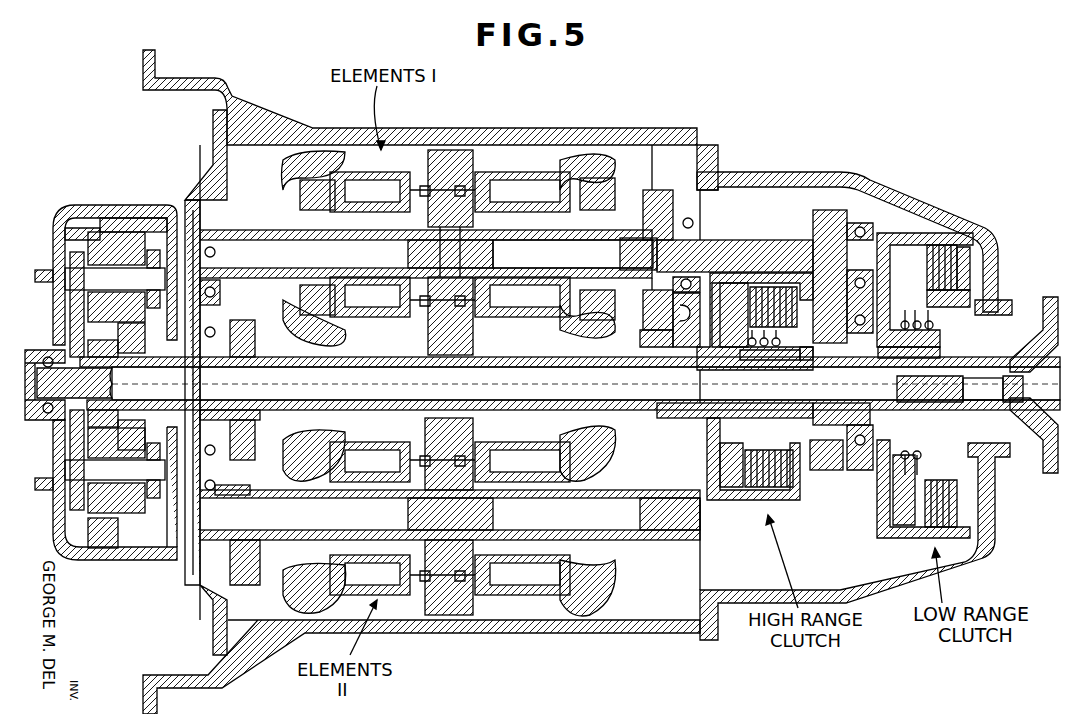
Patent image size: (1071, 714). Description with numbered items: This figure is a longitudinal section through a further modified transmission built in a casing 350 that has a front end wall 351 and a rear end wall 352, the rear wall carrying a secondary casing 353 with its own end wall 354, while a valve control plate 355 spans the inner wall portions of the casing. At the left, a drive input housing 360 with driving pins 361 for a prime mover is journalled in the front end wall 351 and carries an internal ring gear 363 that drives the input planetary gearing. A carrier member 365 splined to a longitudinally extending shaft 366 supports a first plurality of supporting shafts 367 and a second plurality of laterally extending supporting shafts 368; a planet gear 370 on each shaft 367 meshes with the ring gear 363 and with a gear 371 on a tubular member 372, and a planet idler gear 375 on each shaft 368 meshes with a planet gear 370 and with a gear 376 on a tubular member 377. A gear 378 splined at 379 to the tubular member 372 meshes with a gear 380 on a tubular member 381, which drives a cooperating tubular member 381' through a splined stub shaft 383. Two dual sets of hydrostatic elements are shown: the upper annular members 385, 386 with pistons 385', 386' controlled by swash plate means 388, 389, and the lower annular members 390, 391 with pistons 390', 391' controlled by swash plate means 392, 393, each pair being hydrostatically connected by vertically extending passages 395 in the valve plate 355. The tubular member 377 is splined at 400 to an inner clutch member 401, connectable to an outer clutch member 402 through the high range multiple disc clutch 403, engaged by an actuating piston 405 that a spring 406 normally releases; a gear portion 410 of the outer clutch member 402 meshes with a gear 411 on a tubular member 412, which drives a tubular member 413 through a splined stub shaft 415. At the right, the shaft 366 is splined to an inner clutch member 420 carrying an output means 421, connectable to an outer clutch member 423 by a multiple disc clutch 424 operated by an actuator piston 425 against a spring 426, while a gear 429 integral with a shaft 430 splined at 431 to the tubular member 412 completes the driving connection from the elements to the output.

The casing 350 is at (470, 132).
The front end wall 351 is at (205, 192).
The rear end wall 352 is at (712, 196).
The secondary casing 353 is at (810, 185).
The end wall 354 is at (1000, 275).
The valve control plate 355 is at (475, 158).
The drive input housing 360 is at (105, 205).
The driving pins 361 is at (40, 270).
The internal ring gear 363 is at (136, 218).
The carrier member 365 is at (70, 312).
The longitudinally extending shaft 366 is at (586, 383).
The supporting shafts 367 is at (115, 277).
The supporting shafts 368 is at (115, 470).
The planet gear 370 is at (75, 240).
The gear 371 is at (118, 328).
The tubular member 372 is at (178, 368).
The planet idler gear 375 is at (135, 512).
The gear 376 is at (110, 434).
The tubular member 377 is at (258, 395).
The gear 378 is at (240, 320).
The spline 379 is at (256, 430).
The gear 380 is at (255, 585).
The tubular member 381 is at (450, 515).
The cooperating tubular member 381' is at (653, 494).
The splined stub shaft 383 is at (476, 514).
The annular member 385 is at (430, 137).
The pistons 385' is at (395, 253).
The annular member 386 is at (555, 139).
The pistons 386' is at (522, 246).
The swash plate means 388 is at (270, 180).
The swash plate means 389 is at (622, 160).
The annular member 390 is at (437, 542).
The pistons 390' is at (379, 521).
The annular member 391 is at (539, 634).
The pistons 391' is at (545, 521).
The swash plate means 392 is at (318, 455).
The swash plate means 393 is at (630, 592).
The vertically extending passages 395 is at (473, 350).
The spline 400 is at (790, 360).
The inner clutch member 401 is at (812, 360).
The outer clutch member 402 is at (798, 285).
The multiple disc clutch 403 is at (770, 287).
The actuating piston 405 is at (720, 345).
The spring 406 is at (752, 347).
The gear portion 410 is at (648, 338).
The gear 411 is at (710, 175).
The tubular member 412 is at (631, 254).
The tubular member 413 is at (426, 254).
The splined stub shaft 415 is at (530, 254).
The inner clutch member 420 is at (960, 389).
The output means 421 is at (1040, 325).
The outer clutch member 423 is at (935, 235).
The multiple disc clutch 424 is at (972, 262).
The actuator piston 425 is at (927, 255).
The spring 426 is at (903, 348).
The gear 429 is at (832, 210).
The shaft 430 is at (730, 240).
The spline 431 is at (673, 285).